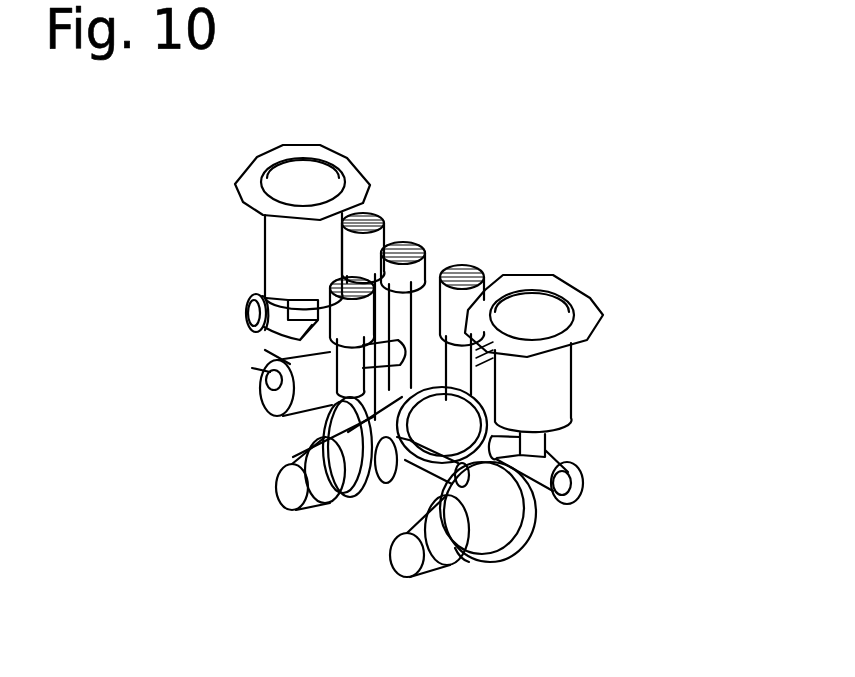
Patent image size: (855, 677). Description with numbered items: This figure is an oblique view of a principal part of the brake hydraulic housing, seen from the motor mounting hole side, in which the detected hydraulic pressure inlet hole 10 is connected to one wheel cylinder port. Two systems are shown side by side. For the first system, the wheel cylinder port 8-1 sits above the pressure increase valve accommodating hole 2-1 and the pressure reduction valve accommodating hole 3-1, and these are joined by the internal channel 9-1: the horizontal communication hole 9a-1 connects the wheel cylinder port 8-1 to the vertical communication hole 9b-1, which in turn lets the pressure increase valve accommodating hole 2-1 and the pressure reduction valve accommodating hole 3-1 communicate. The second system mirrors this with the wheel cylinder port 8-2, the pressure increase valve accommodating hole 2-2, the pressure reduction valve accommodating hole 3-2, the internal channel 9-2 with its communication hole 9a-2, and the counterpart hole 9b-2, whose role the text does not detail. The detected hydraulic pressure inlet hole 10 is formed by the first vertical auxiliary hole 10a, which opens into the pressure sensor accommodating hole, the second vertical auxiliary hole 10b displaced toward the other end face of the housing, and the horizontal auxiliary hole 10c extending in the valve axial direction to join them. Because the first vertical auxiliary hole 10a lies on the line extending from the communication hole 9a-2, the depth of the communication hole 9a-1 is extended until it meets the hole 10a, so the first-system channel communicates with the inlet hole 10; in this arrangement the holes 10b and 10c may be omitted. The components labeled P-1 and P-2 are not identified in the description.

The wheel cylinder port 8-2 is at (283, 170).
The second plug of second passage 9b-2 is at (376, 228).
The second vertical auxiliary hole 10b is at (345, 372).
The horizontal auxiliary hole 10c is at (407, 313).
The vertical communication hole 9b-1 is at (447, 263).
The first vertical auxiliary hole 10a is at (437, 340).
The detected hydraulic pressure inlet hole 10 is at (398, 84).
The wheel cylinder port 8-1 is at (553, 313).
The internal channel for a first system 9-1 is at (548, 441).
The horizontal communication hole 9a-1 is at (557, 458).
The communication hole 9a-2 is at (272, 315).
The internal channel for a second system 9-2 is at (270, 340).
The second pump P-2 is at (267, 363).
The pressure increase valve accommodating hole 2-2 is at (257, 402).
The pressure reduction valve accommodating hole 3-2 is at (290, 485).
The pressure increase valve accommodating hole 2-1 is at (343, 487).
The pressure reduction valve accommodating hole 3-1 is at (398, 553).
The first pump P-1 is at (471, 557).